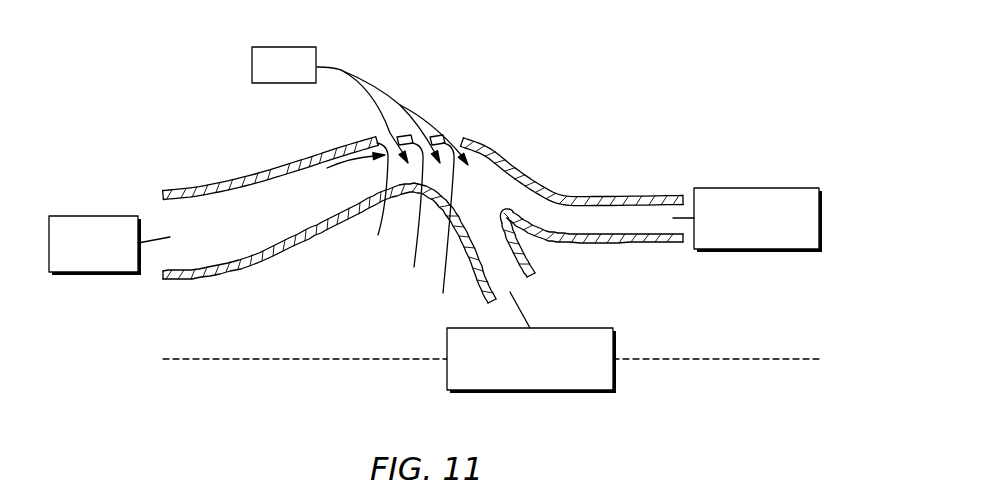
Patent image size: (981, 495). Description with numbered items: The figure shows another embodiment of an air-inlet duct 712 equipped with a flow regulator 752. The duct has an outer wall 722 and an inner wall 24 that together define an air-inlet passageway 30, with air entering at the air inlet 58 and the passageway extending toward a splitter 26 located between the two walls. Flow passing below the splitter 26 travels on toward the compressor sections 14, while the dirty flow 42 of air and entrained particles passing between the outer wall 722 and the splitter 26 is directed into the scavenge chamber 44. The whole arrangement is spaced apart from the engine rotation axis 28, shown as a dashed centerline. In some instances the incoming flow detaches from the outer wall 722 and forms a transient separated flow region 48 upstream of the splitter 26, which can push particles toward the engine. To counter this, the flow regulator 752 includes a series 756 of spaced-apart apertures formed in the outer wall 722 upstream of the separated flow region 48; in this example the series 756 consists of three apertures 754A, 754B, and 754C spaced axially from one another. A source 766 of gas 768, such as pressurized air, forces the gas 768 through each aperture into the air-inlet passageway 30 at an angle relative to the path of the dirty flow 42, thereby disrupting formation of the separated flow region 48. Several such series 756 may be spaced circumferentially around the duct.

The compressor sections 14 is at (530, 391).
The inner wall 24 is at (278, 254).
The splitter 26 is at (532, 250).
The engine rotation axis 28 is at (233, 361).
The air-inlet passageway 30 is at (176, 250).
The dirty flow 42 is at (355, 148).
The scavenge chamber 44 is at (757, 250).
The separated flow region 48 is at (490, 180).
The air inlet 58 is at (96, 273).
The air-inlet duct 712 is at (637, 87).
The outer wall 722 is at (206, 190).
The flow regulator 752 is at (466, 90).
The first aperture 754A is at (378, 201).
The second aperture 754B is at (414, 212).
The third aperture 754C is at (445, 226).
The series of apertures 756 is at (414, 90).
The source of gas 766 is at (251, 63).
The gas 768 is at (340, 70).